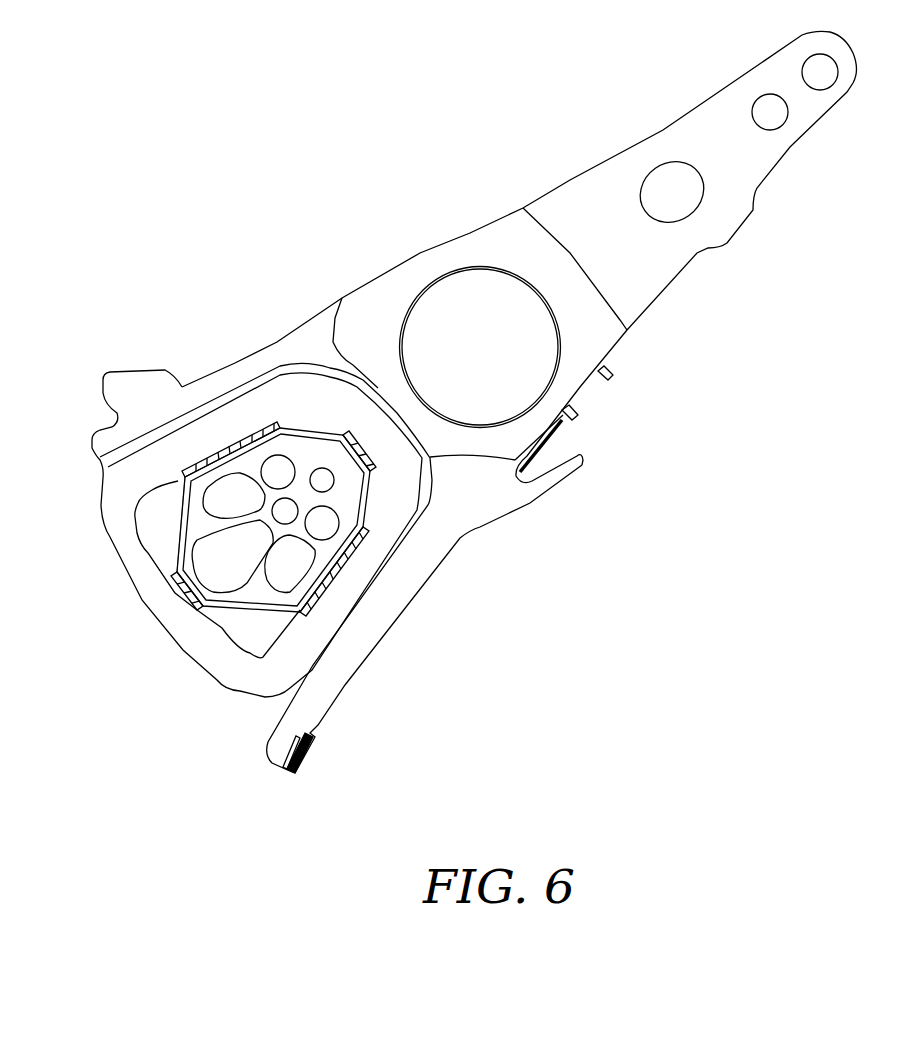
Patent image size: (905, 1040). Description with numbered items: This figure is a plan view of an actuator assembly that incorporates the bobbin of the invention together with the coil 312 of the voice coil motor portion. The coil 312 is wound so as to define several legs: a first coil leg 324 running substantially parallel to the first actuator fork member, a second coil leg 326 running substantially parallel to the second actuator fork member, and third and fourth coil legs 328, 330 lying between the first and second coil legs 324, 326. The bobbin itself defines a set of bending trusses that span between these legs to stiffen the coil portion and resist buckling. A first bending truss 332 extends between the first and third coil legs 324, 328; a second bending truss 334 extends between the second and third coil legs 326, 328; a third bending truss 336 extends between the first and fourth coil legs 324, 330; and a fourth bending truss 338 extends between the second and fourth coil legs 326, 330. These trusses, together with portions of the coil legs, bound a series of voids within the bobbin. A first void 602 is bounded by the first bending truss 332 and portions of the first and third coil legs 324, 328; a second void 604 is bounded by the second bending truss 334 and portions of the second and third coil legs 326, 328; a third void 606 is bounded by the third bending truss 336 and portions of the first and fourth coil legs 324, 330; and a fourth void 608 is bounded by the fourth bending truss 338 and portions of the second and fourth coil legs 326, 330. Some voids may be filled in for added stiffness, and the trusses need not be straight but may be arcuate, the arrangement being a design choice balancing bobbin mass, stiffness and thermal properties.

The coil 312 is at (227, 662).
The first coil leg 324 is at (363, 573).
The second coil leg 326 is at (235, 425).
The third coil leg 328 is at (180, 608).
The fourth coil leg 330 is at (367, 418).
The first bending truss 332 is at (277, 607).
The second bending truss 334 is at (190, 503).
The third bending truss 336 is at (365, 507).
The fourth bending truss 338 is at (300, 438).
The first void 602 is at (250, 623).
The second void 604 is at (167, 520).
The third void 606 is at (374, 497).
The fourth void 608 is at (318, 426).